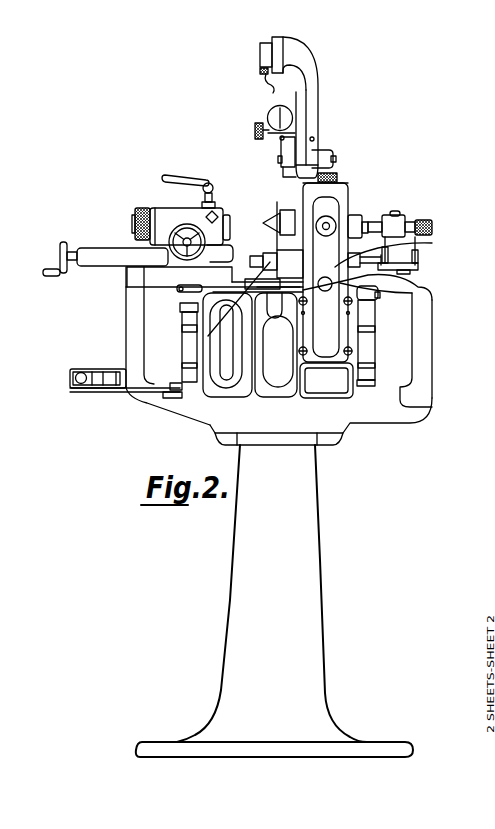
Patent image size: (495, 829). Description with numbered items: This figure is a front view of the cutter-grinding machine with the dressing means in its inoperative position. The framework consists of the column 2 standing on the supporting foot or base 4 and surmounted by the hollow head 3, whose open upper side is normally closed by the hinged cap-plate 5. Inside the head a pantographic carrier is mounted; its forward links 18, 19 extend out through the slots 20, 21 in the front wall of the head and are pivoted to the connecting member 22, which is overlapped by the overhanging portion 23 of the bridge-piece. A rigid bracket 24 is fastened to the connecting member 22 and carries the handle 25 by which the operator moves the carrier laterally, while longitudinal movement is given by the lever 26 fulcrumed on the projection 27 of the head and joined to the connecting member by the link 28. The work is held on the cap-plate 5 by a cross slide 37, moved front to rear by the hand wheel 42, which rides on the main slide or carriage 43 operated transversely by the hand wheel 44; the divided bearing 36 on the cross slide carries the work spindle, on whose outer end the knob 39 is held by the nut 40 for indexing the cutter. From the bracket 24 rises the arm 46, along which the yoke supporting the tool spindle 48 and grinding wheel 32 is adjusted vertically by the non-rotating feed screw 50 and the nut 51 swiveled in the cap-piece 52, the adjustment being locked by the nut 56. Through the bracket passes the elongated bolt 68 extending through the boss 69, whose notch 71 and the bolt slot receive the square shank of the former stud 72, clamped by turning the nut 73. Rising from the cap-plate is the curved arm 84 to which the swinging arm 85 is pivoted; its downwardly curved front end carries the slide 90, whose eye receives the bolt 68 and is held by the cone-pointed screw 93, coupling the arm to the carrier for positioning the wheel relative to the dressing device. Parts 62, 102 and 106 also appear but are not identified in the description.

The column 2 is at (230, 573).
The hollow head 3 is at (352, 418).
The supporting foot or base 4 is at (137, 748).
The cap-plate 5 is at (140, 290).
The link 18 is at (380, 337).
The link 19 is at (182, 345).
The slot or opening 20 is at (430, 407).
The slot or opening 21 is at (145, 349).
The connecting member 22 is at (258, 383).
The overhanging portion 23 is at (270, 320).
The bracket 24 is at (325, 312).
The handle 25 is at (379, 299).
The lever 26 is at (77, 383).
The arm or projection 27 is at (108, 378).
The link 28 is at (147, 402).
The grinding wheel 32 is at (258, 215).
The bearing 36 is at (166, 176).
The cross slide 37 is at (166, 208).
The knob 39 is at (133, 225).
The nut 40 is at (123, 260).
The hand wheel 42 is at (276, 250).
The main slide or carriage 43 is at (130, 268).
The hand wheel 44 is at (55, 240).
The arm 46 is at (356, 212).
The spindle 48 is at (281, 182).
The feed screw 50 is at (337, 173).
The nut 51 is at (349, 183).
The cap-piece 52 is at (324, 152).
The nut 56 is at (393, 250).
The clamp screw 62 is at (218, 273).
The elongated bolt 68 is at (422, 277).
The boss 69 is at (380, 313).
The notch or slot 71 is at (298, 270).
The former stud 72 is at (186, 333).
The nut 73 is at (434, 295).
The curved arm 84 is at (256, 141).
The arm 85 is at (317, 105).
The slide 90 is at (260, 56).
The screw 93 is at (262, 93).
The dial 102 is at (264, 124).
The arm inner edge 106 is at (307, 93).